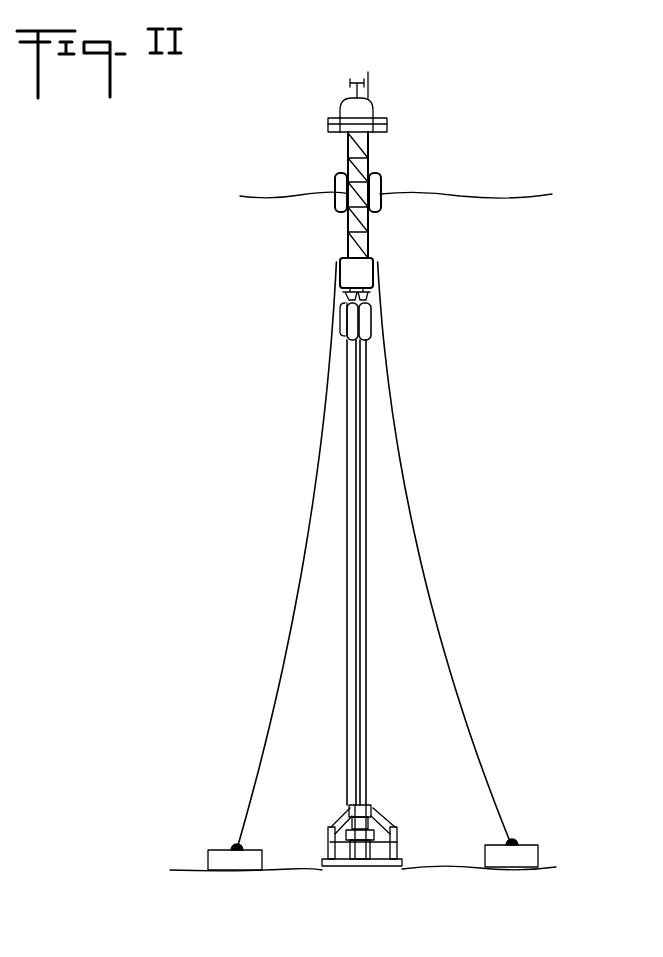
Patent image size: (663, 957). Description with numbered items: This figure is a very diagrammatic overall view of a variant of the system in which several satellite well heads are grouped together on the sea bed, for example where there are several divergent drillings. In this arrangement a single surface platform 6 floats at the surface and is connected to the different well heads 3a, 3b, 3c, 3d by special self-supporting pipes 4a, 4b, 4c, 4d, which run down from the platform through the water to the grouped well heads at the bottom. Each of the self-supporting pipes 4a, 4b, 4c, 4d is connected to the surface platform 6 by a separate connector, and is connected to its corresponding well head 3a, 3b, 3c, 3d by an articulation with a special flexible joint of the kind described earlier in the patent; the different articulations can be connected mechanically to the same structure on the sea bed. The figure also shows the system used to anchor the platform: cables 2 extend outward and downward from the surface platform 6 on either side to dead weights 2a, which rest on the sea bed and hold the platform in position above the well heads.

The surface platform 6 is at (386, 121).
The self-supporting pipe 4a is at (370, 375).
The self-supporting pipe 4b is at (355, 428).
The self-supporting pipe 4c is at (358, 398).
The self-supporting pipe 4d is at (345, 453).
The cable 2 is at (277, 693).
The dead weight 2a is at (218, 851).
The well head 3a is at (370, 840).
The well head 3b is at (357, 858).
The well head 3c is at (366, 850).
The well head 3d is at (345, 840).